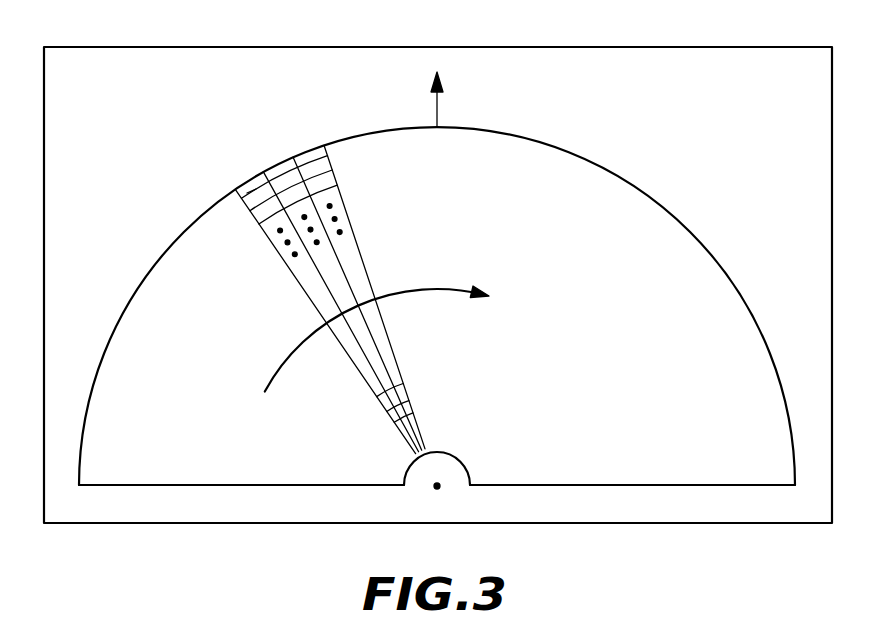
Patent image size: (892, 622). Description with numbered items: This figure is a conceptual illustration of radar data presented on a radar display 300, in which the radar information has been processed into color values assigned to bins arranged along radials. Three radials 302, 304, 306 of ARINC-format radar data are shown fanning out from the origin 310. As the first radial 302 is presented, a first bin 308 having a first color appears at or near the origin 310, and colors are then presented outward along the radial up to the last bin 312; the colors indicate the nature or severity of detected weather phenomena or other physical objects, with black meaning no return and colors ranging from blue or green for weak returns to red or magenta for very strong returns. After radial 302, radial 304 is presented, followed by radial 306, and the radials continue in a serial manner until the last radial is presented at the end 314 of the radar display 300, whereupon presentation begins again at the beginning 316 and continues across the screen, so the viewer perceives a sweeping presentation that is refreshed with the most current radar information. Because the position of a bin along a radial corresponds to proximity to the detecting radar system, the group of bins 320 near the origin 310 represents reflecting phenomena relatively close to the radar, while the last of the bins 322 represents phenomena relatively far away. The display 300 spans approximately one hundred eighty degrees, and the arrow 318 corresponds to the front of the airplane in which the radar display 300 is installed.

The radar display 300 is at (727, 47).
The first radial 302 is at (241, 171).
The second radial 304 is at (273, 153).
The third radial 306 is at (306, 142).
The first bin 308 is at (409, 457).
The origin 310 is at (448, 489).
The last bin 312 is at (246, 203).
The end of the radar display 314 is at (629, 476).
The beginning of the radar display 316 is at (128, 474).
The arrow 318 is at (438, 103).
The group of bins 320 is at (404, 385).
The last of the bins 322 is at (334, 148).